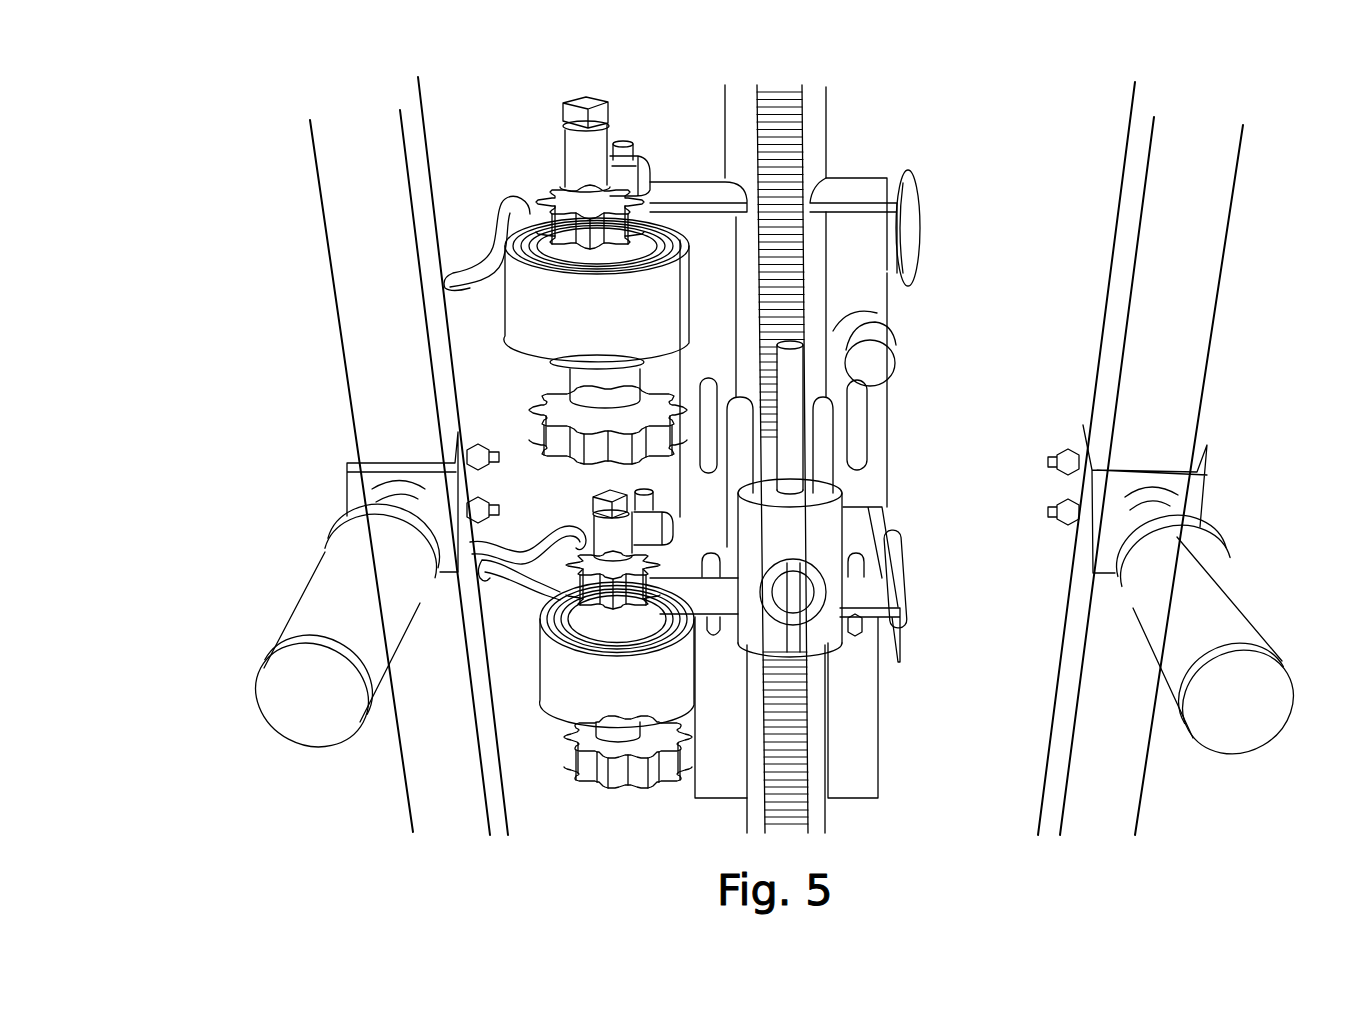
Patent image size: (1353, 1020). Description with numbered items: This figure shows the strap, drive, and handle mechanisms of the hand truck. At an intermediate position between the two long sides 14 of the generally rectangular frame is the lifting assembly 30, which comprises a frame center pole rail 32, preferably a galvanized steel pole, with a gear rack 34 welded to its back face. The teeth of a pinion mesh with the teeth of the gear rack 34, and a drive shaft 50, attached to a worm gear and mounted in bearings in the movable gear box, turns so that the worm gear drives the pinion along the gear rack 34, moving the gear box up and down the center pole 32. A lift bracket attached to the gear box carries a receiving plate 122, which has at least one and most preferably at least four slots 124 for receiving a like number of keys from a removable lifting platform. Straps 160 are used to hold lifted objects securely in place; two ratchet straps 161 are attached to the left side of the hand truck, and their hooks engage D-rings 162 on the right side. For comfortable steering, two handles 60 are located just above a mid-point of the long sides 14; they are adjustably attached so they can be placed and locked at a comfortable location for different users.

The long side 14 is at (1173, 430).
The lifting assembly 30 is at (828, 541).
The frame center pole rail 32 is at (812, 160).
The gear rack 34 is at (800, 125).
The drive shaft 50 is at (793, 390).
The handle 60 is at (256, 603).
The receiving plate 122 is at (858, 285).
The slot 124 is at (697, 433).
The strap 160 is at (647, 102).
The ratchet strap 161 is at (535, 303).
The D-ring 162 is at (912, 236).